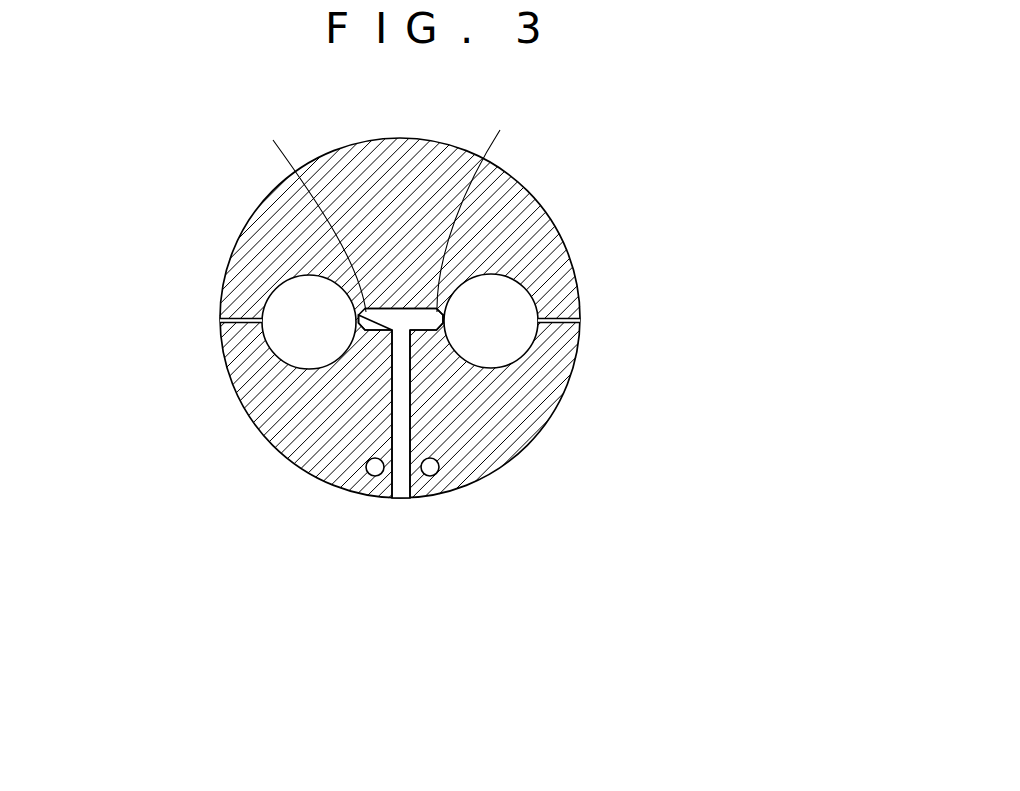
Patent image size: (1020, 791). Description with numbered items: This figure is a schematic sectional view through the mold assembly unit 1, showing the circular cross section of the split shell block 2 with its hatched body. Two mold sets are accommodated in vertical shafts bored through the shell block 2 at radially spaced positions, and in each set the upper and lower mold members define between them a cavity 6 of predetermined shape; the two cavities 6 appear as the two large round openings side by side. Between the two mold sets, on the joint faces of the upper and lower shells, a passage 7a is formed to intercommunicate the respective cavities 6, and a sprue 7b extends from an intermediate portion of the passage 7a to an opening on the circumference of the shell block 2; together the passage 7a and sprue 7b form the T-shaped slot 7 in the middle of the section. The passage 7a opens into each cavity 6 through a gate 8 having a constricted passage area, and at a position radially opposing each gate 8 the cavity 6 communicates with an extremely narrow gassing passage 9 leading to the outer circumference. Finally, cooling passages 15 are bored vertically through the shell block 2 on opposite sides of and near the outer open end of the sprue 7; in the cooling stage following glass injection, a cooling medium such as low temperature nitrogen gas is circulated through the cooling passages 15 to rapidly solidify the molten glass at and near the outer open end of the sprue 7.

The mold assembly unit 1 is at (538, 188).
The split shell block 2 is at (523, 428).
The cavity 6 is at (297, 313).
The sprue 7 is at (390, 402).
The passage 7a is at (400, 310).
The sprue 7b is at (401, 490).
The gate 8 is at (389, 201).
The gassing passage 9 is at (243, 320).
The cooling passages 15 is at (374, 468).